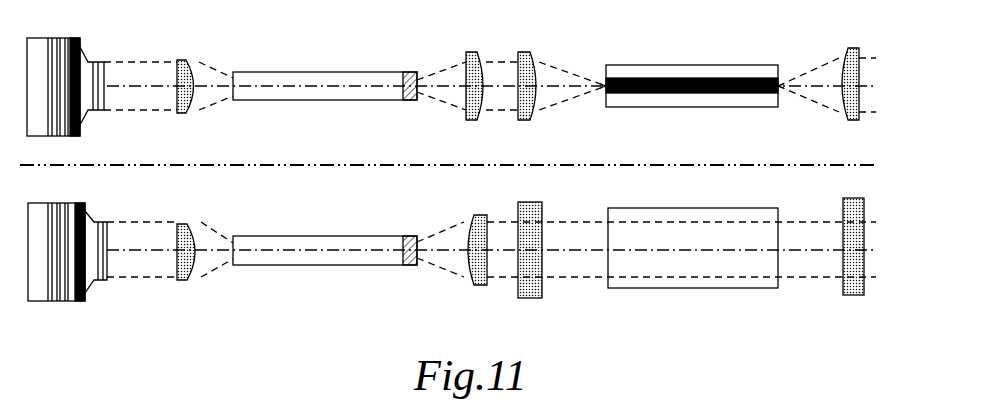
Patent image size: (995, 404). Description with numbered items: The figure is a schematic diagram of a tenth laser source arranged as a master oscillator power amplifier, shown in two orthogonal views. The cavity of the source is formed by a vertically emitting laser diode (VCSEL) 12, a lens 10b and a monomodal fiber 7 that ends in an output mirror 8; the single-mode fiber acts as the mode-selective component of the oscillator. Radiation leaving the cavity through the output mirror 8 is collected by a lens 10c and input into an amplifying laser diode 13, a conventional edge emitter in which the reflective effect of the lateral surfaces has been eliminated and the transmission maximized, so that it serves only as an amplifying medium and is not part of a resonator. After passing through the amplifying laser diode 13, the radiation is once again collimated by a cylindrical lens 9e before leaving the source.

The vertically emitting laser diode (VCSEL) 12 is at (78, 203).
The lens 10b is at (188, 230).
The monomodal fiber 7 is at (280, 78).
The output mirror 8 is at (412, 72).
The lens 10c is at (470, 215).
The cylindrical lens 9e is at (533, 108).
The amplifying laser diode 13 is at (690, 73).